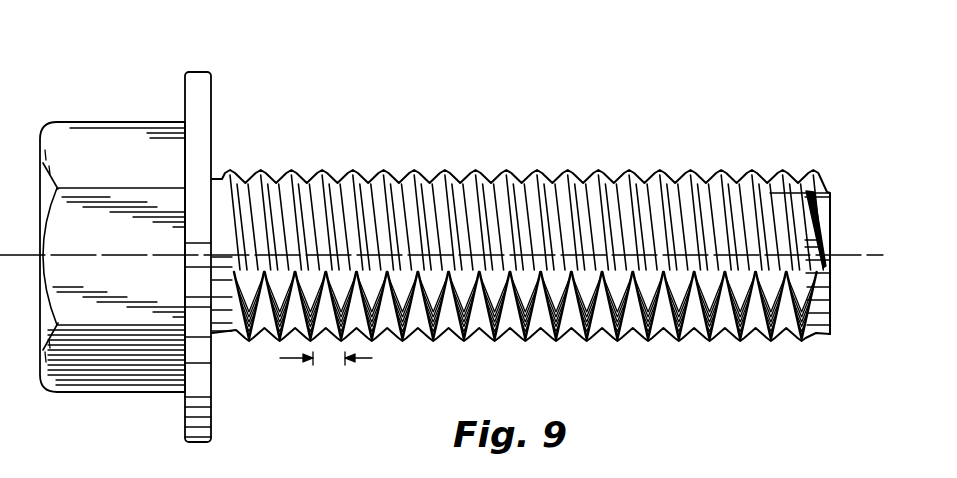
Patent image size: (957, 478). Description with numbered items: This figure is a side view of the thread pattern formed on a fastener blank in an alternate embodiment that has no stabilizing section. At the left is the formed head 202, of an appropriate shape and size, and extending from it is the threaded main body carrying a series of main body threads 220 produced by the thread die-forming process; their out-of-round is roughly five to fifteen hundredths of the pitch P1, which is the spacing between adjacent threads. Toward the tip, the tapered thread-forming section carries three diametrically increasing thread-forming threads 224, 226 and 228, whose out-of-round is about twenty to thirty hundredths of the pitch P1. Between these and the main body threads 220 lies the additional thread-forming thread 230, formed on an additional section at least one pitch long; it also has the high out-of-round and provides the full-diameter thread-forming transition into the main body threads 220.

The head 202 is at (125, 133).
The main body threads 220 is at (690, 172).
The thread-forming thread 224 is at (812, 190).
The thread-forming thread 226 is at (781, 172).
The thread-forming thread 228 is at (752, 172).
The additional thread-forming thread 230 is at (722, 172).
The pitch P1 is at (363, 362).